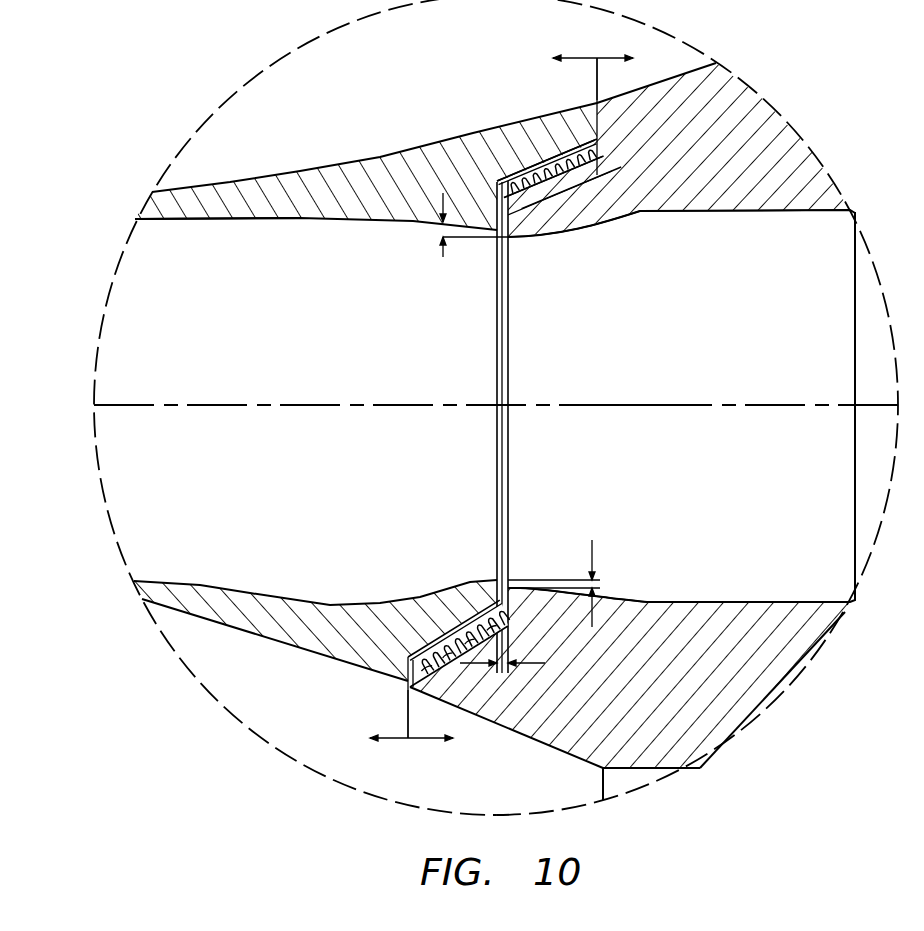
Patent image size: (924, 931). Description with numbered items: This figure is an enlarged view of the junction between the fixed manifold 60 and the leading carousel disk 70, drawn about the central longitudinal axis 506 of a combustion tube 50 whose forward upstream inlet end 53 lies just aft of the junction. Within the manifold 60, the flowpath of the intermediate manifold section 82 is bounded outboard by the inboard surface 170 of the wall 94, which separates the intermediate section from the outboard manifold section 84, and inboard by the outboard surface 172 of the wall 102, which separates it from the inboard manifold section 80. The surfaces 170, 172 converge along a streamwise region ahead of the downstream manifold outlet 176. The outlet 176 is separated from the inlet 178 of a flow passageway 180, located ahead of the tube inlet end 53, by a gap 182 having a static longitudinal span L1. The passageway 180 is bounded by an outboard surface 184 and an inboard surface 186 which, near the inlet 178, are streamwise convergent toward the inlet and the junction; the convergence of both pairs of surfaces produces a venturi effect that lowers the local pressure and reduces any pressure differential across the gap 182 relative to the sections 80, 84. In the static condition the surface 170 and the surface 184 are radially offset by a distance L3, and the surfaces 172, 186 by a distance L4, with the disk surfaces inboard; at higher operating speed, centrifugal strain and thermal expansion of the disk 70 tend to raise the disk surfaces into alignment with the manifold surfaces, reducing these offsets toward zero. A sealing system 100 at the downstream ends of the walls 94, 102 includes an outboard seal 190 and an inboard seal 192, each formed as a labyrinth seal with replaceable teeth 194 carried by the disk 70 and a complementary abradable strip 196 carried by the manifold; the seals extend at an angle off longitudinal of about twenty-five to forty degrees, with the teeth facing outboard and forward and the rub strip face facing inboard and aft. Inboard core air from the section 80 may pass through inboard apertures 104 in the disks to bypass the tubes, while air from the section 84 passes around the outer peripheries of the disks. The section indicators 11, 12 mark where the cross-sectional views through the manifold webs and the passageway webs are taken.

The outboard manifold section 84 is at (350, 87).
The fixed manifold 60 is at (362, 163).
The wall 94 is at (229, 200).
The sealing system 100 is at (535, 157).
The abradable strip 196 is at (492, 162).
The outboard seal 190 is at (604, 133).
The replaceable teeth 194 is at (578, 177).
The inboard surface of wall 170 is at (189, 228).
The radial offset distance L3 is at (443, 240).
The outboard surface of passageway 184 is at (577, 235).
The leading disk 70 is at (765, 187).
The gap 182 is at (510, 292).
The flow passageway 180 is at (727, 309).
The inlet 178 is at (507, 327).
The downstream manifold outlet 176 is at (507, 367).
The central longitudinal axis 506 is at (692, 405).
The forward upstream inlet end 53 is at (853, 370).
The combustion tube 50 is at (890, 365).
The intermediate manifold section 82 is at (308, 477).
The outboard surface of wall 172 is at (197, 576).
The radial offset distance L4 is at (605, 578).
The inboard seal 192 is at (518, 601).
The inboard surface of passageway 186 is at (613, 590).
The wall 102 is at (217, 613).
The inboard manifold section 80 is at (303, 722).
The static longitudinal span of gap L1 is at (540, 663).
The inboard apertures 104 is at (627, 779).
The section line 11 is at (484, 402).
The section line 12 is at (542, 402).